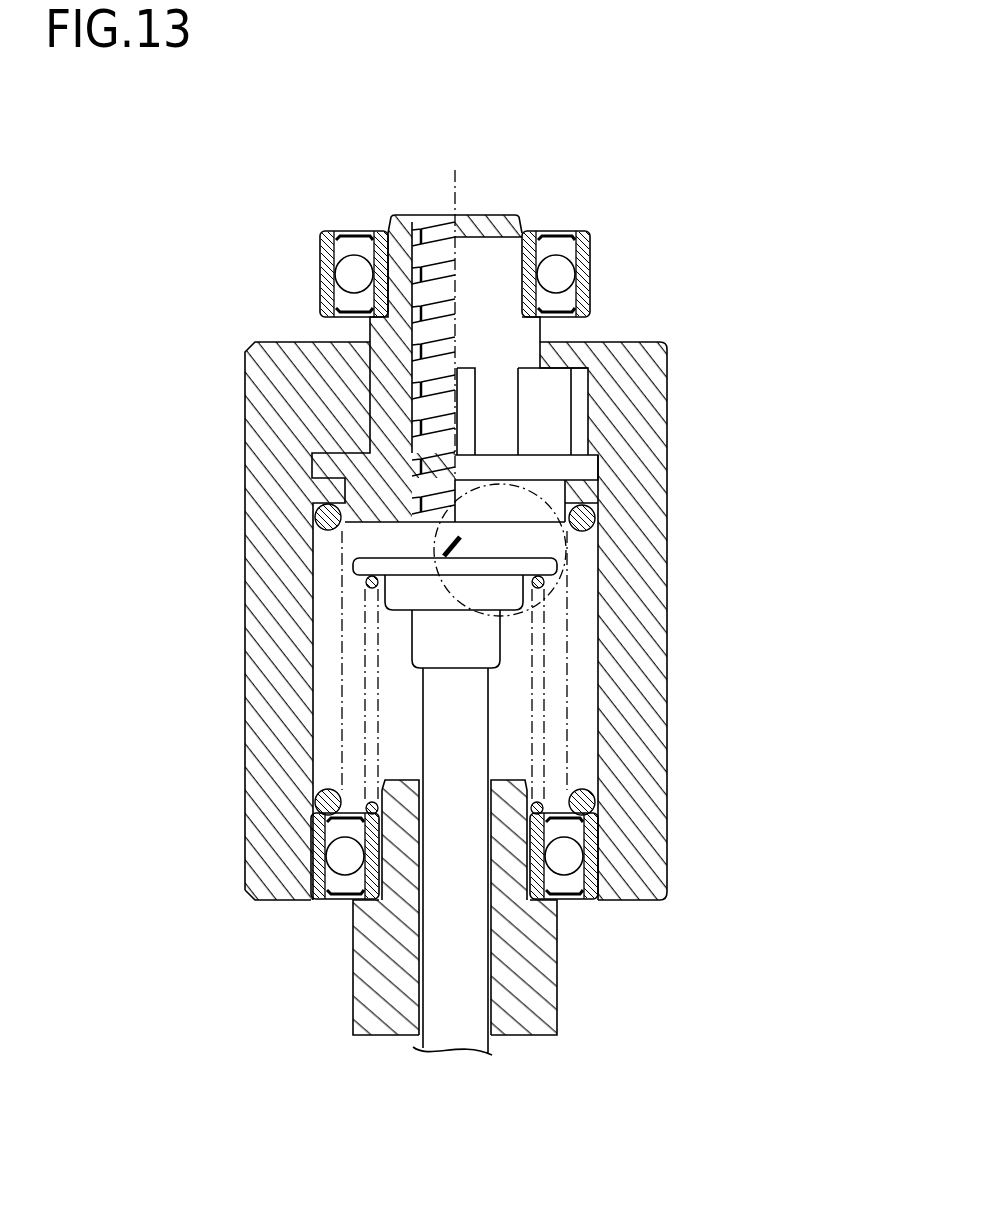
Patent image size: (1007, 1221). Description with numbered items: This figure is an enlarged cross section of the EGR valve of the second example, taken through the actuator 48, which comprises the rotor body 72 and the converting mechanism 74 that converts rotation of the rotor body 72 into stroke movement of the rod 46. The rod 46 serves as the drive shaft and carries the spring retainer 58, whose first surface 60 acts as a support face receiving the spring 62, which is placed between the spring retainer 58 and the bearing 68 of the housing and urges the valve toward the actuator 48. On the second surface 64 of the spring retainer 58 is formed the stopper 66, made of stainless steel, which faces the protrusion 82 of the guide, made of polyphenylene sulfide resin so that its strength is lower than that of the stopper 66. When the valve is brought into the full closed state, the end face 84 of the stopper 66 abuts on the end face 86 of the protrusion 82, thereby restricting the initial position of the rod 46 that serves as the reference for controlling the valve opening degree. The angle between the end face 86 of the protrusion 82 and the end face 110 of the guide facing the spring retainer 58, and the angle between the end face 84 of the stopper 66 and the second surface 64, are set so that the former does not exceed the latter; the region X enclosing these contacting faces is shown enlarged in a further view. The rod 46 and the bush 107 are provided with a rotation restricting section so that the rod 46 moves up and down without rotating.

The actuator 48 is at (462, 557).
The rotor body 72 is at (623, 340).
The converting mechanism 74 is at (409, 393).
The stopper 66 is at (440, 522).
The protrusion 82 is at (492, 558).
The end face of the guide 110 is at (522, 527).
The end face of the protrusion 86 is at (465, 558).
The second surface 64 is at (540, 575).
The spring retainer 58 is at (552, 566).
The first surface 60 is at (528, 582).
The region X is at (483, 619).
The end face of the stopper 84 is at (425, 623).
The rod 46 is at (458, 957).
The spring 62 is at (545, 792).
The bearing 68 is at (563, 852).
The bush 107 is at (537, 1003).